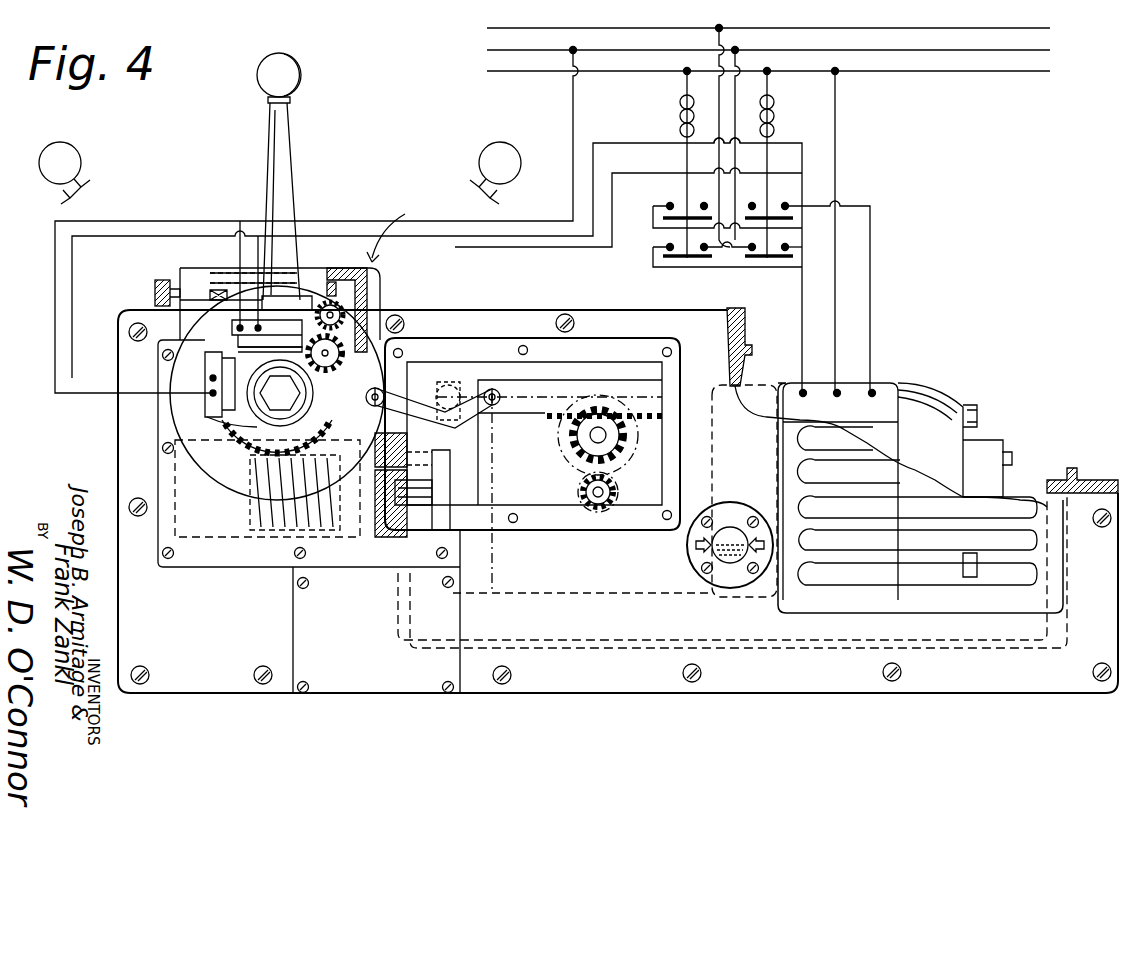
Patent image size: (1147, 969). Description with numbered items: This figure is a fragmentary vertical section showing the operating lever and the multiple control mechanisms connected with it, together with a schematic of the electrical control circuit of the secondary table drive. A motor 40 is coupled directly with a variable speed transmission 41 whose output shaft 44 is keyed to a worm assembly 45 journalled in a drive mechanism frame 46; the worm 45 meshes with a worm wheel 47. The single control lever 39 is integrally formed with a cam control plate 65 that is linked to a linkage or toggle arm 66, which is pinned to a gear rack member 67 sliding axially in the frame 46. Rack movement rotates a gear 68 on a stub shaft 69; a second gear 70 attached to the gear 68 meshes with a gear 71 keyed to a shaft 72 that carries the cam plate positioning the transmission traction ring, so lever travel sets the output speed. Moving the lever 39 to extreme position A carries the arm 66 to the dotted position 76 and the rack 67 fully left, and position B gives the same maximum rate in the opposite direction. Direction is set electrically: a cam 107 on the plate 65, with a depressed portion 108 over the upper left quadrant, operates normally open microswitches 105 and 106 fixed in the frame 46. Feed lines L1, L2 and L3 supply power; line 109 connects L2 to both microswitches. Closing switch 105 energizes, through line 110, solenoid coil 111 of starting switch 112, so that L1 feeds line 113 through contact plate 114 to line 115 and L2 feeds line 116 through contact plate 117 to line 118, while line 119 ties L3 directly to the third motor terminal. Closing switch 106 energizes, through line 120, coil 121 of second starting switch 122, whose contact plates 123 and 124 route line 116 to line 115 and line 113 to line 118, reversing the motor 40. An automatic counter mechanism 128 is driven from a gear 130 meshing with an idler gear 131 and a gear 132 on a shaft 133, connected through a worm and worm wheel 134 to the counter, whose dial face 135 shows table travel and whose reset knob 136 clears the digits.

The control lever 39 is at (290, 116).
The motor 40 is at (925, 415).
The variable speed transmission 41 is at (588, 580).
The output shaft 44 is at (420, 493).
The worm assembly 45 is at (270, 535).
The drive mechanism frame 46 is at (135, 490).
The worm wheel 47 is at (277, 393).
The cam control plate 65 is at (390, 386).
The linkage or toggle arm 66 is at (455, 412).
The gear rack member 67 is at (528, 420).
The gear 68 is at (628, 448).
The stub shaft 69 is at (606, 436).
The second gear 70 is at (560, 448).
The gear 71 is at (580, 490).
The shaft 72 is at (610, 492).
The dotted-line position of linkage arm 76 is at (440, 460).
The microswitch 105 is at (205, 365).
The microswitch 106 is at (245, 337).
The cam 107 is at (235, 425).
The depressed portion 108 is at (255, 352).
The line 109 is at (573, 176).
The line 110 is at (620, 143).
The solenoid coil 111 is at (680, 101).
The starting switch 112 is at (657, 199).
The line 113 is at (719, 145).
The contact plate 114 is at (704, 204).
The line 115 is at (653, 229).
The line 116 is at (736, 146).
The contact plate 117 is at (706, 251).
The line 118 is at (687, 268).
The line 119 is at (837, 155).
The line 120 is at (458, 248).
The solenoid coil 121 is at (775, 105).
The second starting switch 122 is at (809, 190).
The contact plate 123 is at (753, 204).
The switch contact plate 124 is at (790, 260).
The automatic counter mechanism 128 is at (397, 229).
The gear 130 is at (300, 378).
The idler gear 131 is at (387, 341).
The gear 132 is at (345, 318).
The shaft 133 is at (312, 318).
The worm and worm wheel 134 is at (338, 288).
The dial face 135 is at (312, 268).
The reset button or knob 136 is at (153, 292).
The extreme lever position A is at (503, 142).
The extreme lever position B is at (60, 142).
The feed line L1 is at (684, 24).
The feed line L2 is at (671, 46).
The feed line L3 is at (658, 68).